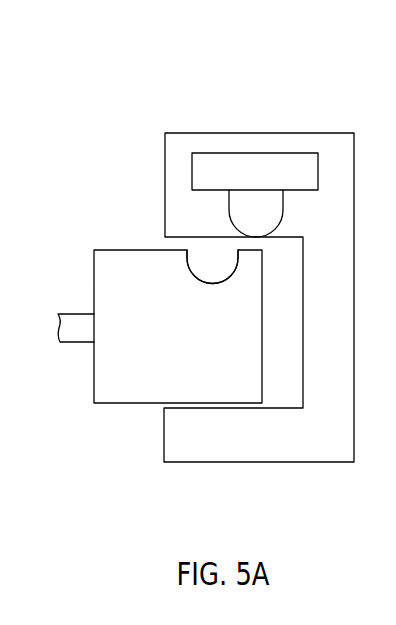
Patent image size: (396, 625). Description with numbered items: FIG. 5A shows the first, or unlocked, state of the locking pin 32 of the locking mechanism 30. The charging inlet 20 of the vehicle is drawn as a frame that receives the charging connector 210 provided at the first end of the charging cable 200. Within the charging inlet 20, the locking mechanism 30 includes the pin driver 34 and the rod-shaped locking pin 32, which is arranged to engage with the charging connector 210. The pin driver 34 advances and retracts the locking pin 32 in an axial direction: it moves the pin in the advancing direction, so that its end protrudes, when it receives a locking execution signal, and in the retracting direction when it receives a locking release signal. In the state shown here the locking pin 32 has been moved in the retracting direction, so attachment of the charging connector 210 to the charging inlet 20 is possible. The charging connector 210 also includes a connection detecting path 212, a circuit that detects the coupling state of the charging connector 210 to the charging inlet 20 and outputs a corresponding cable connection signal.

The charging inlet 20 is at (327, 132).
The locking mechanism 30 is at (238, 132).
The locking pin 32 is at (229, 207).
The pin driver 34 is at (232, 153).
The charging cable 200 is at (75, 313).
The charging connector 210 is at (112, 405).
The connection detecting path 212 is at (200, 255).